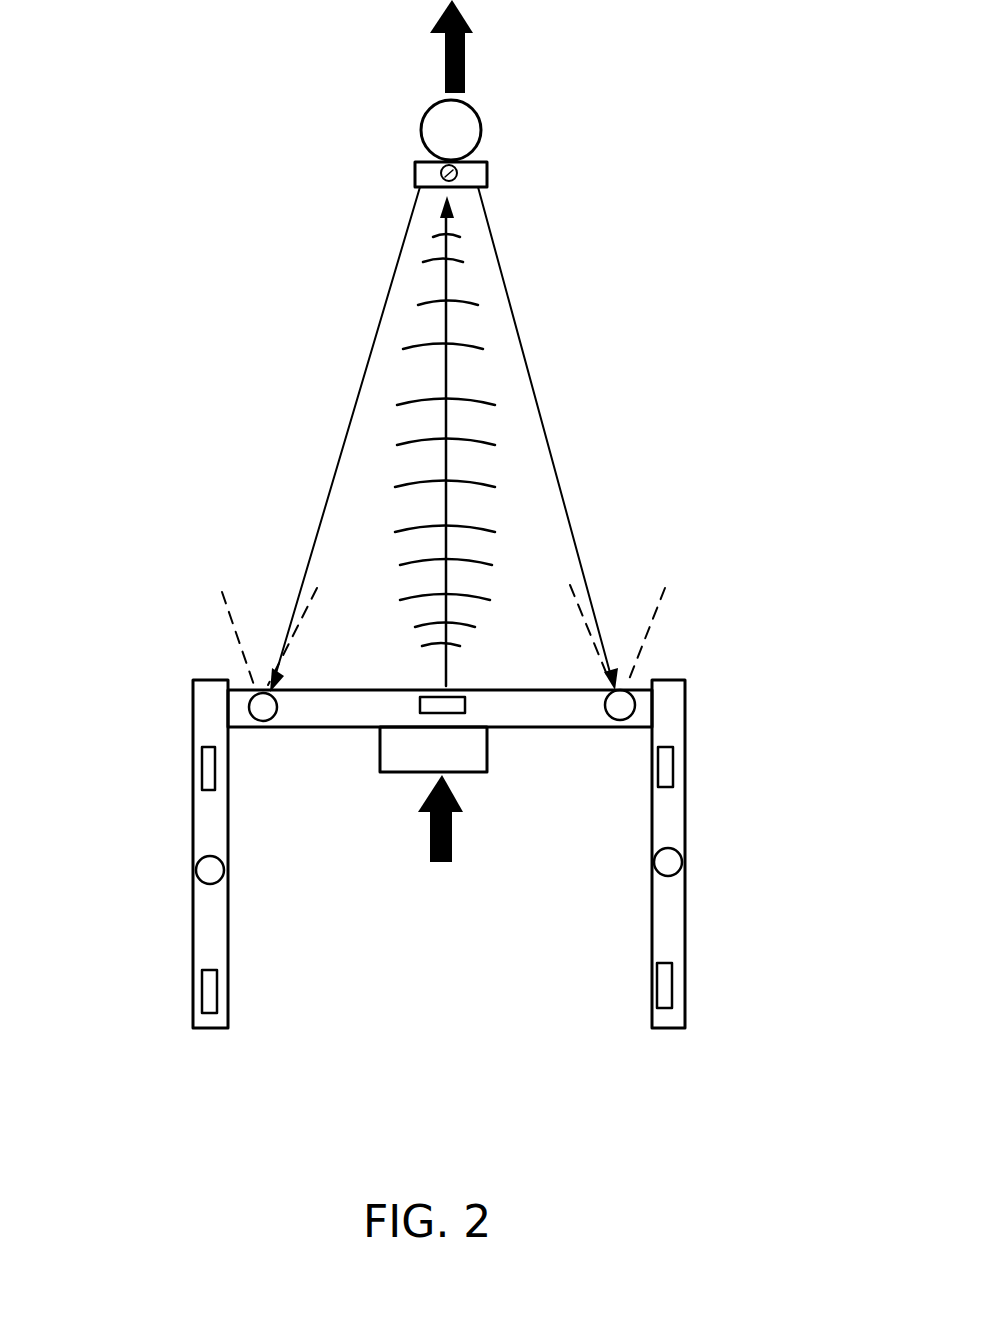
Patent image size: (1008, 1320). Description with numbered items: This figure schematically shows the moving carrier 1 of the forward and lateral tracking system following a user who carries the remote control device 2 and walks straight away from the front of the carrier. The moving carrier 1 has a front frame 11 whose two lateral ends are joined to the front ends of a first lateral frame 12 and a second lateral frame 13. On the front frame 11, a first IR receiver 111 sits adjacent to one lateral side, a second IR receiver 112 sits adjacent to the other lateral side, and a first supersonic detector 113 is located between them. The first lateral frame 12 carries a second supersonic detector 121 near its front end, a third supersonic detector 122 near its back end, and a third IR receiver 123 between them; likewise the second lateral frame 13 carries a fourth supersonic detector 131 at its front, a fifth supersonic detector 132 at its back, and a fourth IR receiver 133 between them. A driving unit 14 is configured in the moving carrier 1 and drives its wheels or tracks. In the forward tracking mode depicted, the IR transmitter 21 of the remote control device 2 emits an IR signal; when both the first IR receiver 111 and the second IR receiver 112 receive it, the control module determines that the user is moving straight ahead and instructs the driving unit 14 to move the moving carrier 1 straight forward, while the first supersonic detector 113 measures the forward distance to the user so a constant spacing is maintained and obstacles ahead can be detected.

The moving carrier 1 is at (752, 748).
The remote control device 2 is at (434, 165).
The IR transmitter 21 is at (422, 188).
The front frame 11 is at (471, 621).
The first IR receiver 111 is at (258, 690).
The second IR receiver 112 is at (633, 687).
The first supersonic detector 113 is at (458, 690).
The first lateral frame 12 is at (149, 856).
The second supersonic detector 121 is at (205, 762).
The third supersonic detector 122 is at (205, 1002).
The third IR receiver 123 is at (207, 870).
The second lateral frame 13 is at (666, 872).
The fourth supersonic detector 131 is at (662, 770).
The fifth supersonic detector 132 is at (658, 992).
The fourth IR receiver 133 is at (673, 860).
The driving unit 14 is at (400, 755).